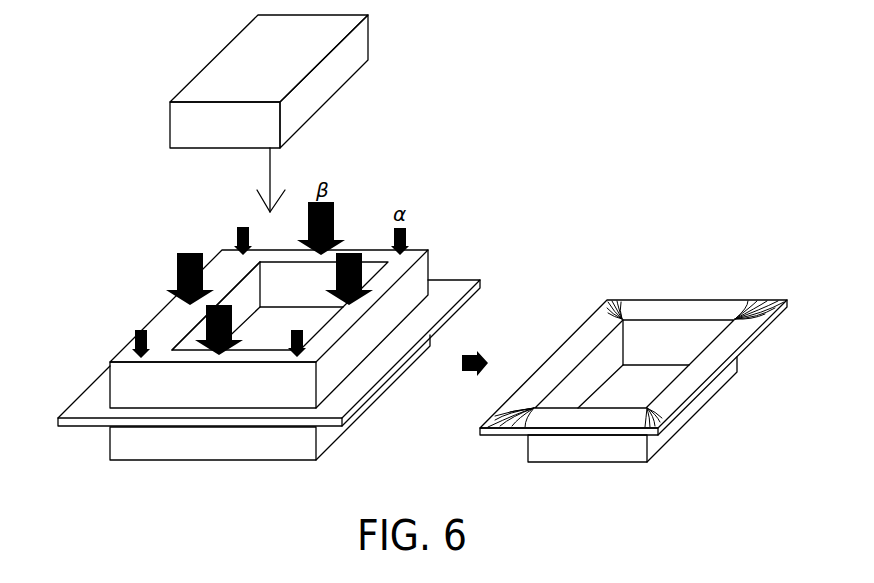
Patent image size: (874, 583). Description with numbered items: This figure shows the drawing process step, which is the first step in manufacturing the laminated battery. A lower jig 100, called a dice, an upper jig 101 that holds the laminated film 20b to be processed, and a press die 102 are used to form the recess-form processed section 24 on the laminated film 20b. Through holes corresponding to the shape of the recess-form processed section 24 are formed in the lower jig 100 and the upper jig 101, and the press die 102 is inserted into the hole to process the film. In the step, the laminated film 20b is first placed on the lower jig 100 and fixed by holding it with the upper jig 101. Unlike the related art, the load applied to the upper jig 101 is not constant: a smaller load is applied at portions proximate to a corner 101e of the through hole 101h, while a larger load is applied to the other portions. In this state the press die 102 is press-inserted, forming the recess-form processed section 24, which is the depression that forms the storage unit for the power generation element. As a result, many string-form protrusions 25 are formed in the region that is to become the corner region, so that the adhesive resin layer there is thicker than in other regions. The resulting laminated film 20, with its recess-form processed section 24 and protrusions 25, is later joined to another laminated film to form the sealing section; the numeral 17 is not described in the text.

The press die 102 is at (362, 47).
The upper jig 101 is at (125, 347).
The through hole 101h is at (242, 302).
The corner 101e is at (172, 348).
The laminated film 20b is at (475, 280).
The lower jig 100 is at (318, 447).
The laminated film 20 is at (680, 418).
The opening corner portion 17 is at (734, 320).
The recess-form processed section 24 is at (672, 335).
The string-form protrusion 25 is at (752, 300).